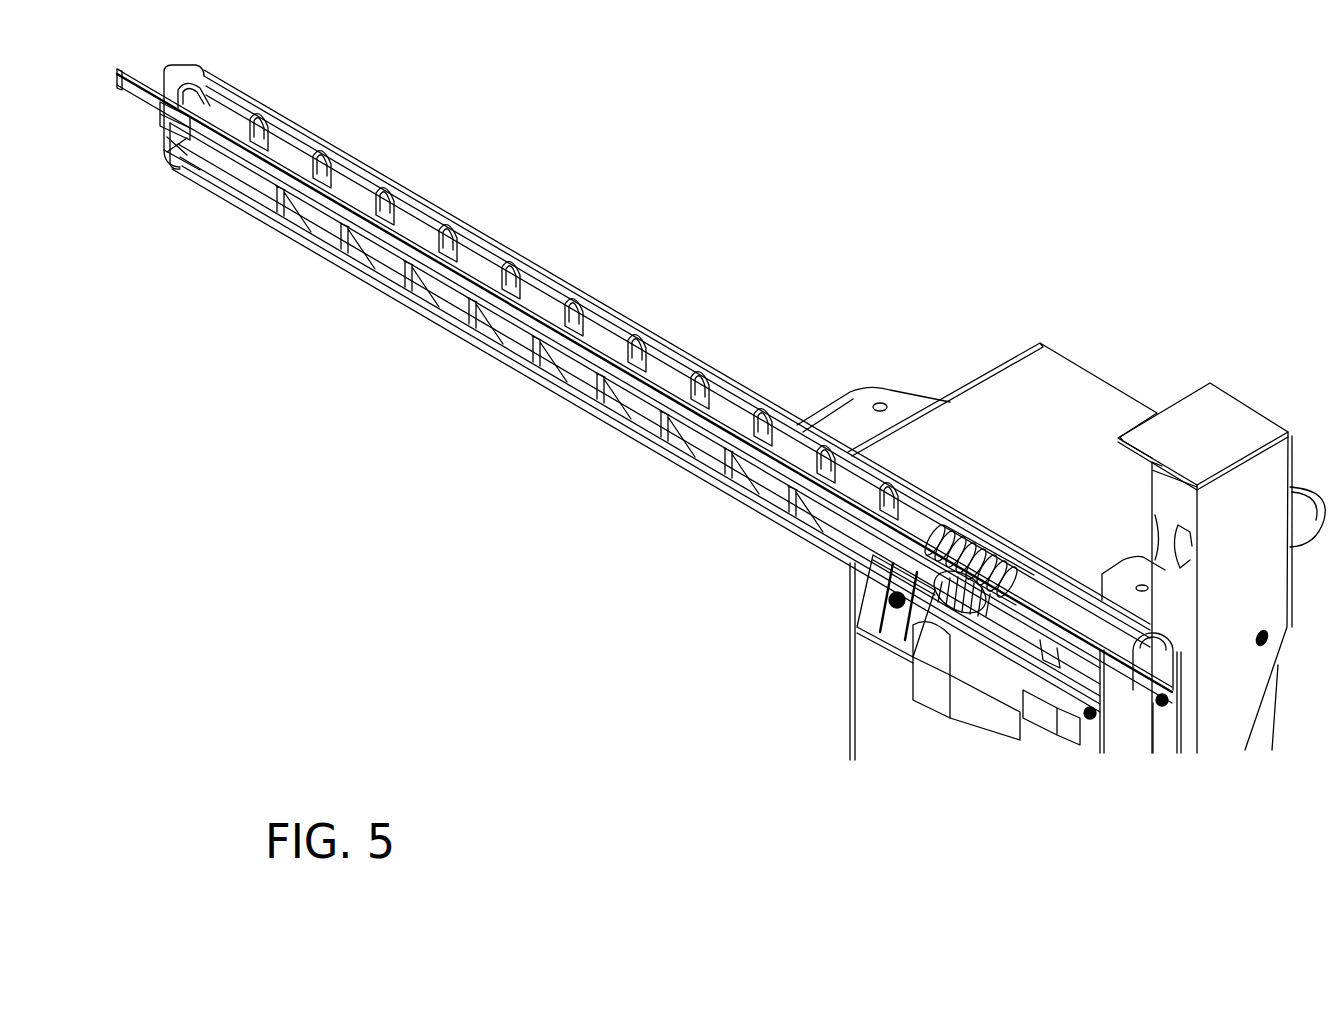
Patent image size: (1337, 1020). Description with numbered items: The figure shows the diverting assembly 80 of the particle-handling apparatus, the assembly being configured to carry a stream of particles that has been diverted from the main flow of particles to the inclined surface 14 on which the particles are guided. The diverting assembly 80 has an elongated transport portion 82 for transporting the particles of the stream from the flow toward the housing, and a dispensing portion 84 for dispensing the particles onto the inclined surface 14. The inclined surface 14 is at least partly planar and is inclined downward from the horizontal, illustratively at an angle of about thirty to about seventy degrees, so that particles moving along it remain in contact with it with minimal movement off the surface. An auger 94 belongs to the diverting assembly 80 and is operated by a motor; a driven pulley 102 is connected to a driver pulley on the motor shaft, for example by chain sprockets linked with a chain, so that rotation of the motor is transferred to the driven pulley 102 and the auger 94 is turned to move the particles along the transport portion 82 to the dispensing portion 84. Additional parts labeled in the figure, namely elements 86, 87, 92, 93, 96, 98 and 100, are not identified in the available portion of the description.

The inclined surface 14 is at (925, 618).
The diverting assembly 80 is at (755, 269).
The transport portion 82 is at (444, 152).
The dispensing portion 84 is at (979, 641).
The housing channel 86 is at (300, 233).
The lower flange 87 is at (643, 413).
The worm gear 92 is at (1003, 632).
The coupling 93 is at (1043, 645).
The auger 94 is at (547, 368).
The clip 96 is at (514, 262).
The support block 98 is at (923, 657).
The drive rod 100 is at (458, 280).
The driven pulley 102 is at (1172, 647).